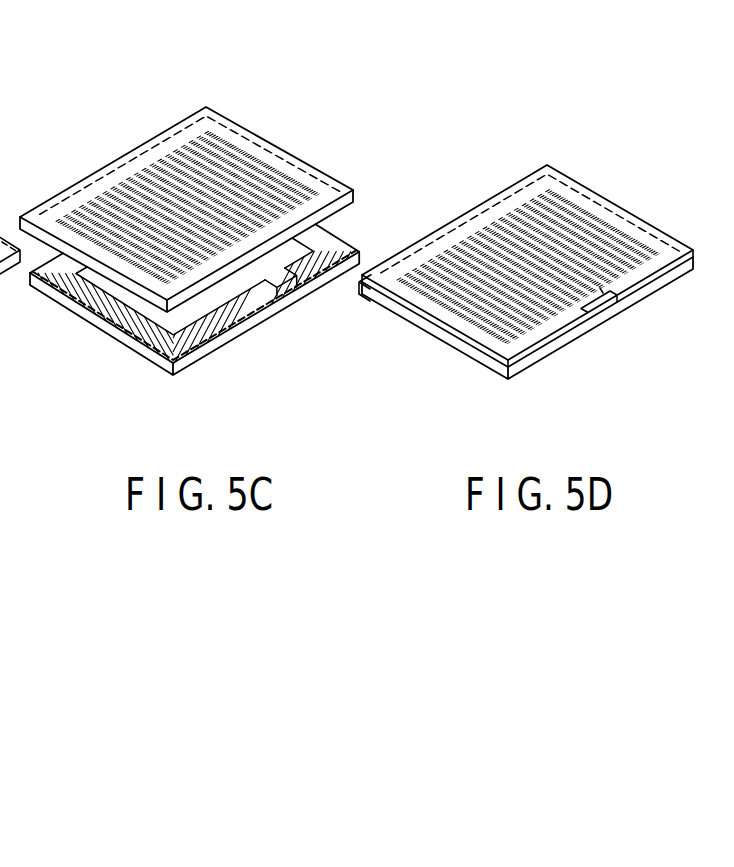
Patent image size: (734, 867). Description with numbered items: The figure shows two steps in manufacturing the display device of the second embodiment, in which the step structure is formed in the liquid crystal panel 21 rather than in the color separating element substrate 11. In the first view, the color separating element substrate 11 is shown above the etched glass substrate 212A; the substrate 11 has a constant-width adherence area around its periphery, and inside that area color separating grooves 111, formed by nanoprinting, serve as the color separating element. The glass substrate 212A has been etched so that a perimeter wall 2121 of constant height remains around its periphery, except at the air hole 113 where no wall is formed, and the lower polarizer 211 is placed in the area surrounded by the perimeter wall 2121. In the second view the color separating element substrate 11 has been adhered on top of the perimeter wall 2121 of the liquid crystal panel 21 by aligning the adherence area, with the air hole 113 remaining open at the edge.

In FIG. 5C, the color separating grooves 111 is at (186, 244).
In FIG. 5C, the lower polarizer 211 is at (120, 157).
In FIG. 5C, the glass substrate 212A is at (194, 299).
In FIG. 5C, the perimeter wall 2121 is at (223, 333).
In FIG. 5C, the air hole 113 is at (276, 302).
In FIG. 5D, the air hole 113 is at (613, 310).
In FIG. 5D, the color separating element substrate 11 is at (527, 269).
In FIG. 5D, the liquid crystal panel 21 is at (527, 285).